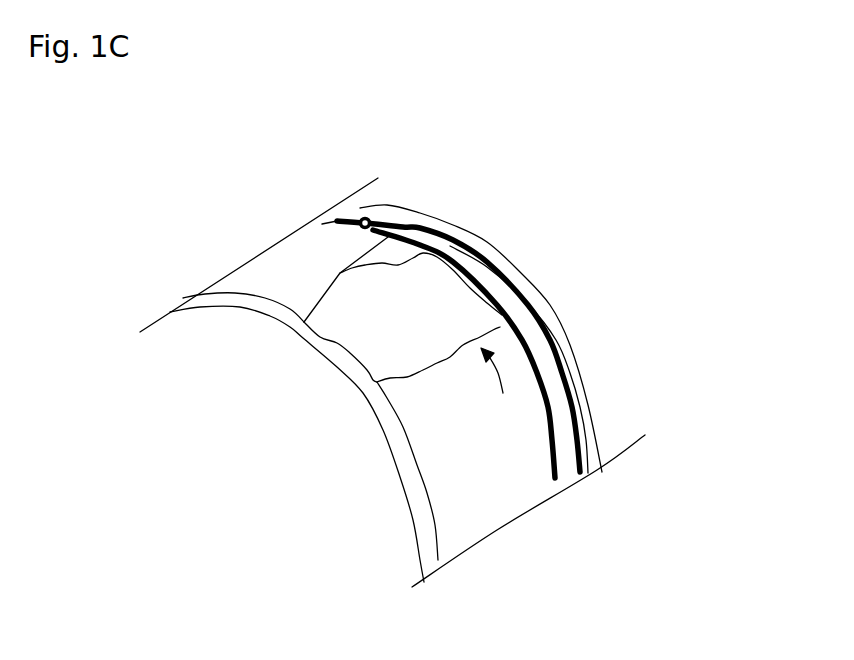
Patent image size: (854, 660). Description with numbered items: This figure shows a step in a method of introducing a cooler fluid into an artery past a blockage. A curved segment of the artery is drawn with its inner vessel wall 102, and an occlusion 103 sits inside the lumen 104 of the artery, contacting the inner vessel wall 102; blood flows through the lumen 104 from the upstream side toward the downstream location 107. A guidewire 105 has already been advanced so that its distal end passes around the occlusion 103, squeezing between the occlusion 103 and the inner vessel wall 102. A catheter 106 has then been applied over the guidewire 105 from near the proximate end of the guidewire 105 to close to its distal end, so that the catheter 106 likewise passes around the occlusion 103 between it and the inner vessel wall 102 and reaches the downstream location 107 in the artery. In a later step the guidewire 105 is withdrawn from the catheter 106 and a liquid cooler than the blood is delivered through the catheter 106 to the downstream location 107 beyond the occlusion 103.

The inner vessel wall 102 is at (410, 220).
The occlusion 103 is at (492, 338).
The lumen 104 is at (448, 417).
The guidewire 105 is at (357, 222).
The catheter 106 is at (565, 473).
The downstream location 107 is at (297, 293).